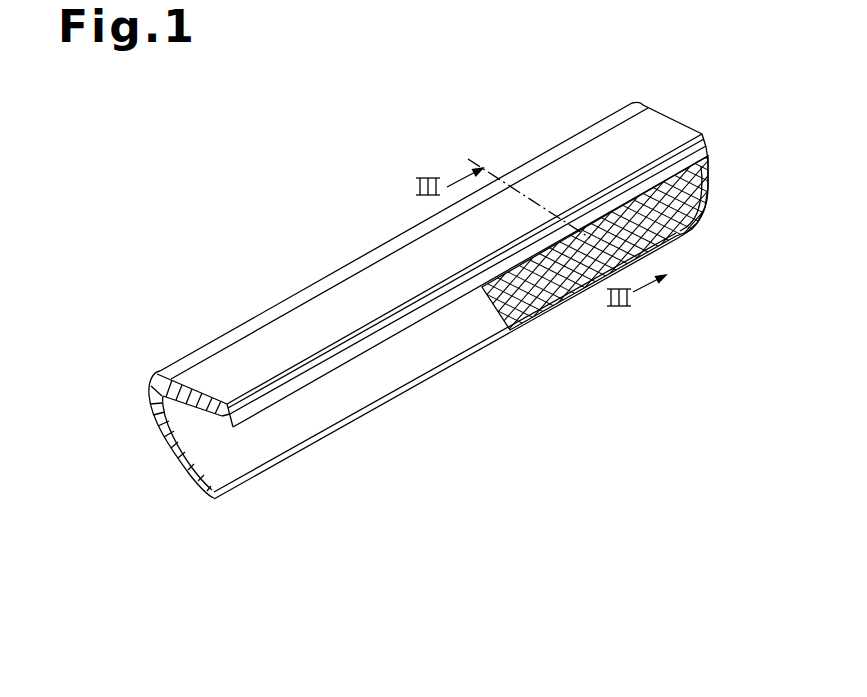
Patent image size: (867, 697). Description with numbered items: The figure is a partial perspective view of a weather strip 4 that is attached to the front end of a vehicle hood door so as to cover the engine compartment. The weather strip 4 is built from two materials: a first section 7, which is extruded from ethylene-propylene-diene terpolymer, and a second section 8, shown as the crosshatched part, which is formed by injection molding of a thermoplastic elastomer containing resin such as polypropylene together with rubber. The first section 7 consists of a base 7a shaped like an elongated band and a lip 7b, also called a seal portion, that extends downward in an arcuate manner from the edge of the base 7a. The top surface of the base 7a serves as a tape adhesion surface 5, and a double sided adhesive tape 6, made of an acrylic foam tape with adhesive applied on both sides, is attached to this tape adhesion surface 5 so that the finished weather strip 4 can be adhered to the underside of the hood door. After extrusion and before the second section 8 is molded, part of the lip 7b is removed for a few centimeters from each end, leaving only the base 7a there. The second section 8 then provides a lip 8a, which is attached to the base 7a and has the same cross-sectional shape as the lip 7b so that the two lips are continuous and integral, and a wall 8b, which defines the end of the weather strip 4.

The weather strip 4 is at (330, 244).
The tape adhesion surface 5 is at (258, 316).
The double sided adhesive tape 6 is at (582, 158).
The first section 7 is at (80, 354).
The base 7a is at (159, 372).
The lip 7b is at (160, 428).
The second section 8 is at (775, 180).
The lip 8a is at (690, 233).
The wall 8b is at (710, 186).